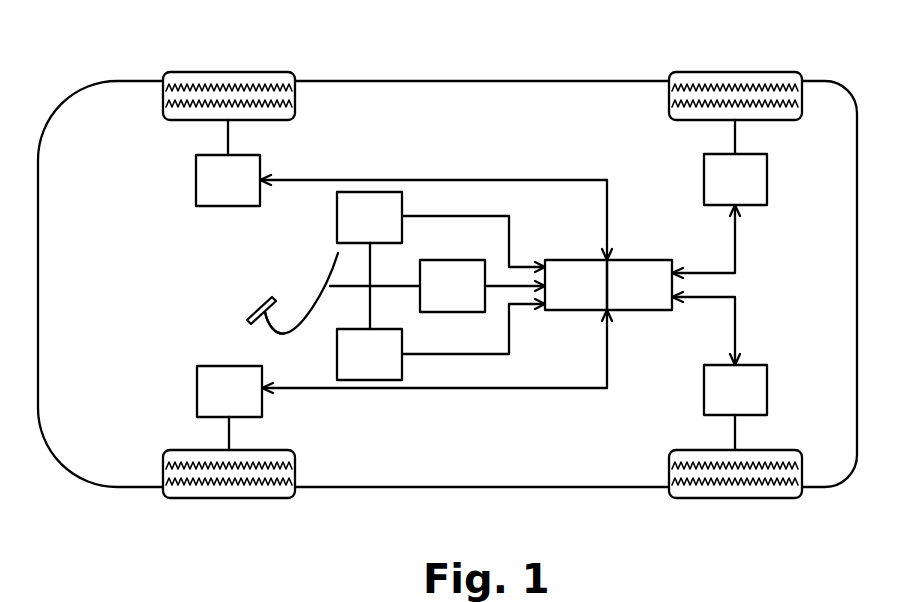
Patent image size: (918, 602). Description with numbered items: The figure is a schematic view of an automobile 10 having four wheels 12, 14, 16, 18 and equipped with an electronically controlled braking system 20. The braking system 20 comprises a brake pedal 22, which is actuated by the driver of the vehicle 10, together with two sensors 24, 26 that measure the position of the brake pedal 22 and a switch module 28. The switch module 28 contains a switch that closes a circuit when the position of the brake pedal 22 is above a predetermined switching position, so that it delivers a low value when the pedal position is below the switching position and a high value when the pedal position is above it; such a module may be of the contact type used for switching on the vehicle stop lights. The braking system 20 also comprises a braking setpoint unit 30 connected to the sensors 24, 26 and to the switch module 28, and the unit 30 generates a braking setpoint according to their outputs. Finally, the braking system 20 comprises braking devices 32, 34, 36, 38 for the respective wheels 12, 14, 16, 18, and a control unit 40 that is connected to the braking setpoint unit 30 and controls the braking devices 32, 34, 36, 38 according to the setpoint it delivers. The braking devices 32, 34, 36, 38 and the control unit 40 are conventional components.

The automobile 10 is at (456, 34).
The wheel 12 is at (246, 72).
The wheel 14 is at (735, 78).
The wheel 16 is at (735, 492).
The wheel 18 is at (236, 493).
The electronically controlled braking system 20 is at (220, 292).
The brake pedal 22 is at (268, 326).
The sensor 24 is at (441, 260).
The sensor 26 is at (441, 339).
The switch module 28 is at (437, 286).
The braking setpoint unit 30 is at (576, 285).
The braking device 32 is at (401, 163).
The braking device 34 is at (735, 162).
The braking device 36 is at (735, 407).
The braking device 38 is at (402, 408).
The control unit 40 is at (671, 284).